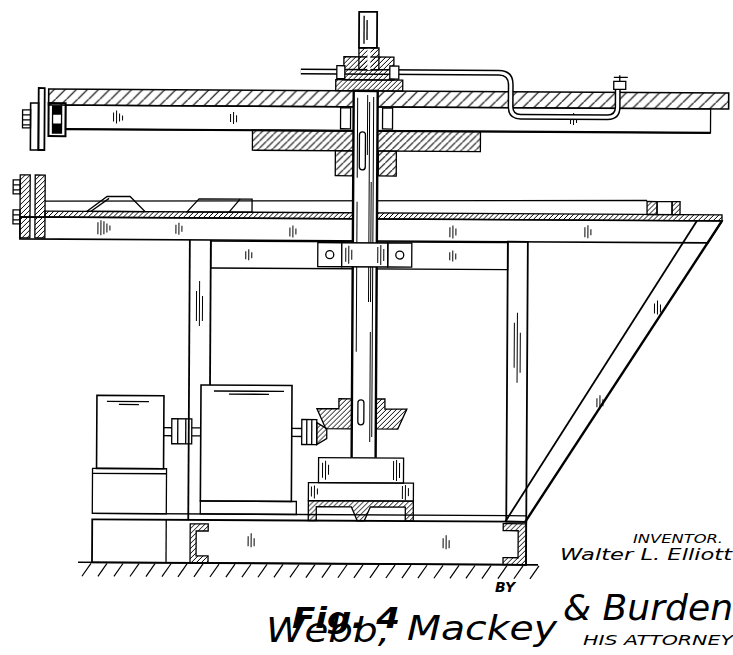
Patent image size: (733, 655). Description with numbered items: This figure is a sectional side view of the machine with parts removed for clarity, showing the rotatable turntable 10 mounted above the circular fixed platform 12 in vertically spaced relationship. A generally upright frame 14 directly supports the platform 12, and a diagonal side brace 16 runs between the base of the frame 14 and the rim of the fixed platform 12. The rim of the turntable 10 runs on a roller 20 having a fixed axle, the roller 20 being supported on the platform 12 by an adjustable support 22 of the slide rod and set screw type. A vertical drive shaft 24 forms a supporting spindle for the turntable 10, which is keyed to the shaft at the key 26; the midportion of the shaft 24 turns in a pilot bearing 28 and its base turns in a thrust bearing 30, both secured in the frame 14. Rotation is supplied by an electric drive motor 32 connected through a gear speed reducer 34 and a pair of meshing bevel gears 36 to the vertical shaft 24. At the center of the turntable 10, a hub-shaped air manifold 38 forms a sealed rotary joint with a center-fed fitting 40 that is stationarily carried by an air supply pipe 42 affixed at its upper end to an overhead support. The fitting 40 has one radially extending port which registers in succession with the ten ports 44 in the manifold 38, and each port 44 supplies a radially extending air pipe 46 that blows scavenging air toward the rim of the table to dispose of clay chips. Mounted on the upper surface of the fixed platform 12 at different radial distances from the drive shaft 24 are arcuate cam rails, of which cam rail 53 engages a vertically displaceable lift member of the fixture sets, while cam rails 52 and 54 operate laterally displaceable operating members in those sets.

The turntable 10 is at (187, 89).
The fixed platform 12 is at (158, 211).
The upright frame 14 is at (530, 335).
The side braces 16 is at (642, 349).
The rollers 20 is at (60, 102).
The adjustable supports 22 is at (45, 182).
The vertical drive shaft 24 is at (378, 300).
The key 26 is at (353, 178).
The pilot bearing 28 is at (337, 262).
The thrust bearing 30 is at (408, 457).
The electric drive motor 32 is at (132, 395).
The gear speed reducer 34 is at (262, 384).
The bevel gears 36 is at (338, 398).
The air manifold 38 is at (383, 56).
The center-fed fitting 40 is at (348, 55).
The air supply pipe 42 is at (378, 18).
The ports 44 is at (385, 62).
The air pipe 46 is at (470, 70).
The cam rail 52 is at (645, 200).
The cam rail 53 is at (207, 198).
The cam rail 54 is at (115, 196).